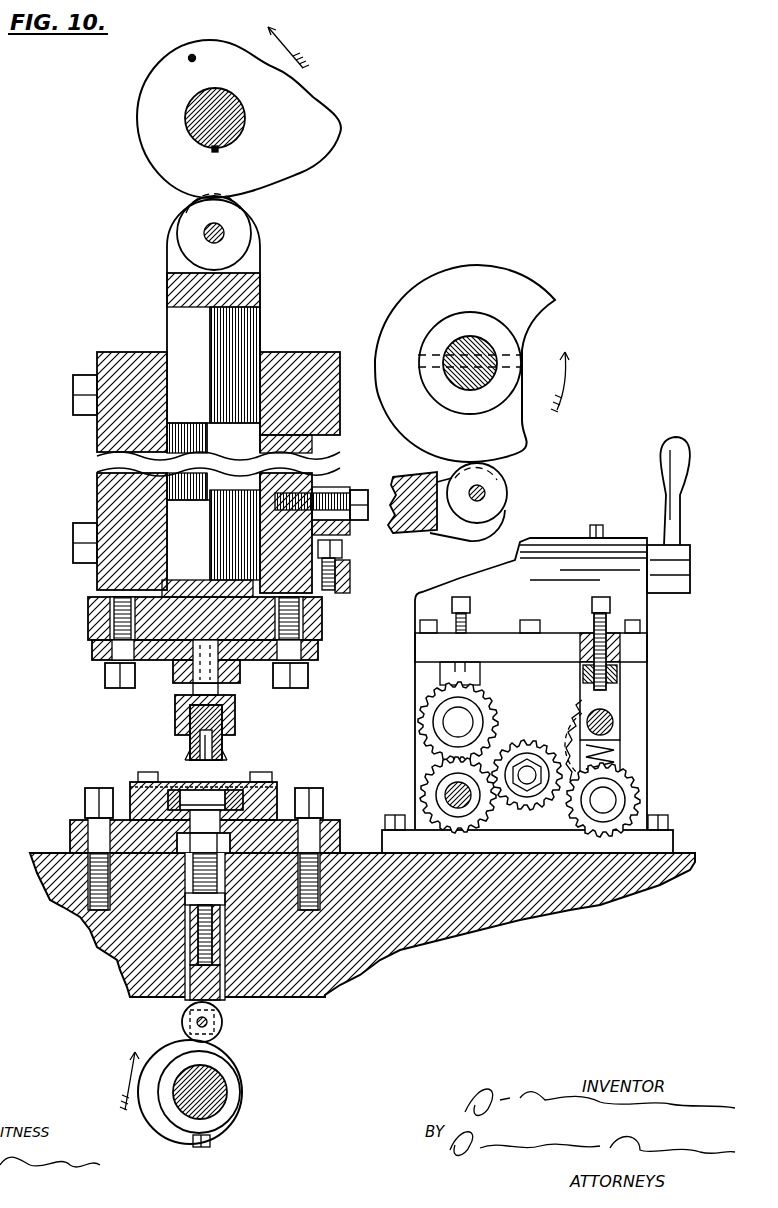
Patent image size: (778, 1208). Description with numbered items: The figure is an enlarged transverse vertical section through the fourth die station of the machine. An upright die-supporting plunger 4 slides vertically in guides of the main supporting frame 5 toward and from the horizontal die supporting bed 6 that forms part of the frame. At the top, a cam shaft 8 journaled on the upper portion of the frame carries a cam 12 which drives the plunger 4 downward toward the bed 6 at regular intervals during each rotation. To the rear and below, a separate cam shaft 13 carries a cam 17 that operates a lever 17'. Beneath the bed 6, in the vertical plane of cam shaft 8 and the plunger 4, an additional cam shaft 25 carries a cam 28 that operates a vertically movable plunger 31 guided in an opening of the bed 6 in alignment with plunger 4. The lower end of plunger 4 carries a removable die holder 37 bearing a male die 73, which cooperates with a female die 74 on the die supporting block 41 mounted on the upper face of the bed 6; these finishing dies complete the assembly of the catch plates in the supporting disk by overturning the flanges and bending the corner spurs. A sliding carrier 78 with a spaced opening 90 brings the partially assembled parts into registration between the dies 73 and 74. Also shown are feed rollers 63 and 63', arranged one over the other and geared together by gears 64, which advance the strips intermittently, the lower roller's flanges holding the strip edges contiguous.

The die-supporting plunger 4 is at (213, 387).
The main supporting frame 5 is at (97, 456).
The die supporting bed 6 is at (377, 930).
The cam shaft 8 is at (232, 122).
The cam 12 is at (332, 135).
The cam shaft 13 is at (445, 352).
The cam 17 is at (482, 363).
The lever 17' is at (447, 511).
The cam shaft 25 is at (215, 1090).
The cam 28 is at (171, 1138).
The vertically movable plunger 31 is at (190, 1003).
The die holder 37 is at (172, 670).
The die supporting block 41 is at (262, 800).
The roller 63 is at (440, 757).
The roller 63' is at (629, 706).
The gears 64 is at (565, 726).
The male die 73 is at (225, 745).
The female die 74 is at (230, 792).
The sliding carrier 78 is at (188, 785).
The opening 90 is at (208, 795).